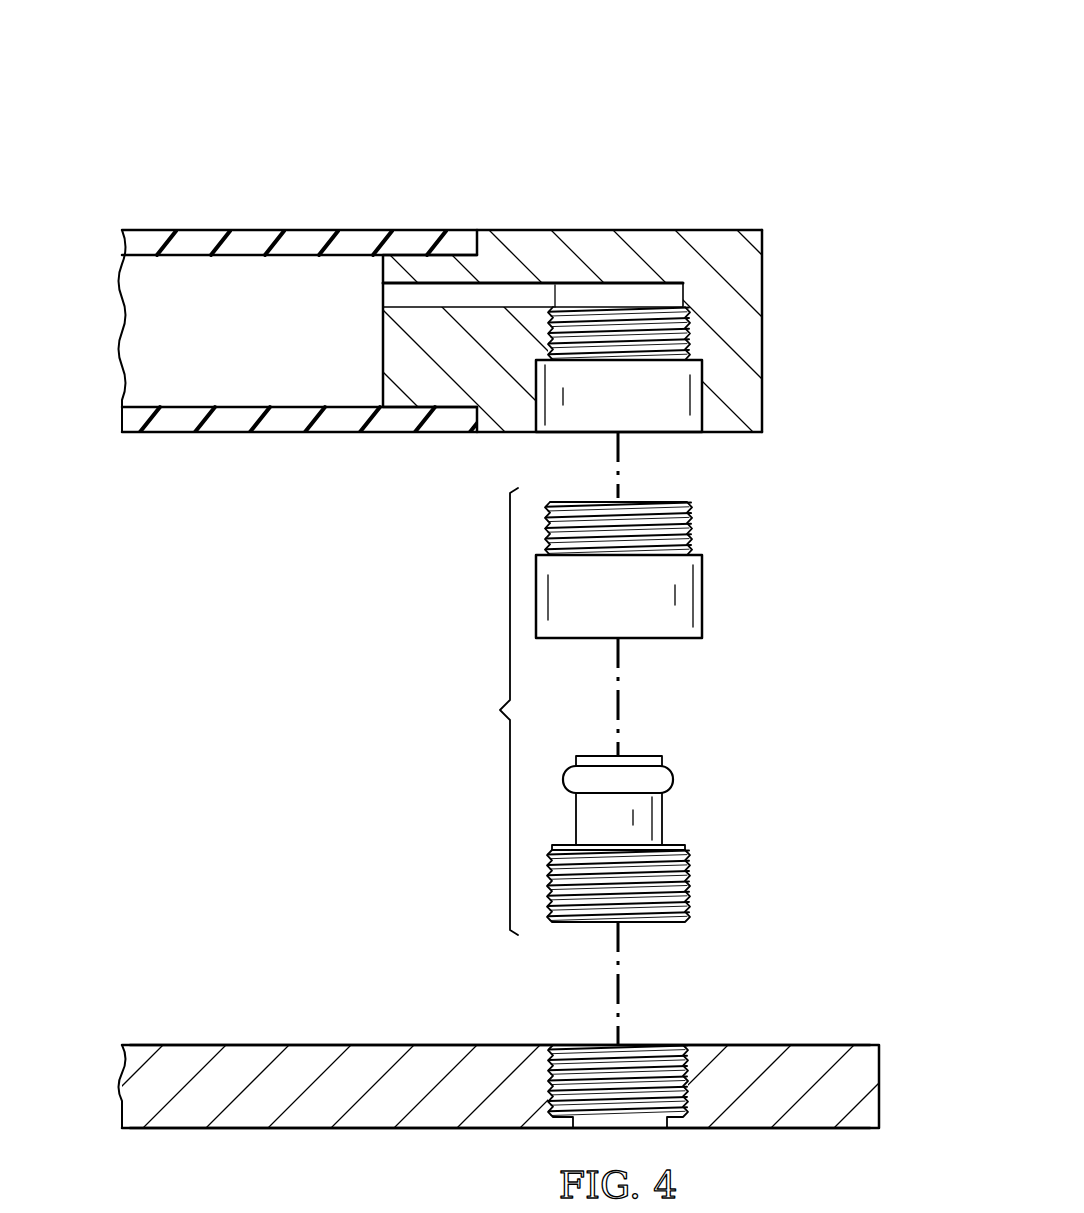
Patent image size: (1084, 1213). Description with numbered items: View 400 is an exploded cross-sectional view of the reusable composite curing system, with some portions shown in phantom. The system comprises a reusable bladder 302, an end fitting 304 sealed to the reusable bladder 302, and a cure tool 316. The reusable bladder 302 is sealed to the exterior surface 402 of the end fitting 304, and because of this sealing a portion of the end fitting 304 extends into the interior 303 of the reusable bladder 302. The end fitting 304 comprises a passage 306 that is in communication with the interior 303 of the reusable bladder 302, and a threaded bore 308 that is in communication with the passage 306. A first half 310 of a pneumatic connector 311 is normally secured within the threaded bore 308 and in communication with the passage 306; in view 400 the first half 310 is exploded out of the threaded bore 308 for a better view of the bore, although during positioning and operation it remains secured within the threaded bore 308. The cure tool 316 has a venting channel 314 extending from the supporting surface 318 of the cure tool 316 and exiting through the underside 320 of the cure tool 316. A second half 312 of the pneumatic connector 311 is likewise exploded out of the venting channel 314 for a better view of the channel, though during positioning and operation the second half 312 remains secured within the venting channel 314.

The view 400 is at (356, 118).
The reusable bladder 302 is at (250, 240).
The interior 303 is at (132, 264).
The end fitting 304 is at (652, 240).
The exterior surface 402 is at (413, 252).
The passage 306 is at (397, 298).
The threaded bore 308 is at (642, 350).
The first half of pneumatic connector 310 is at (703, 597).
The pneumatic connector 311 is at (500, 712).
The second half of pneumatic connector 312 is at (657, 923).
The venting channel 314 is at (593, 1053).
The cure tool 316 is at (879, 1103).
The supporting surface 318 is at (252, 1045).
The underside 320 is at (305, 1128).